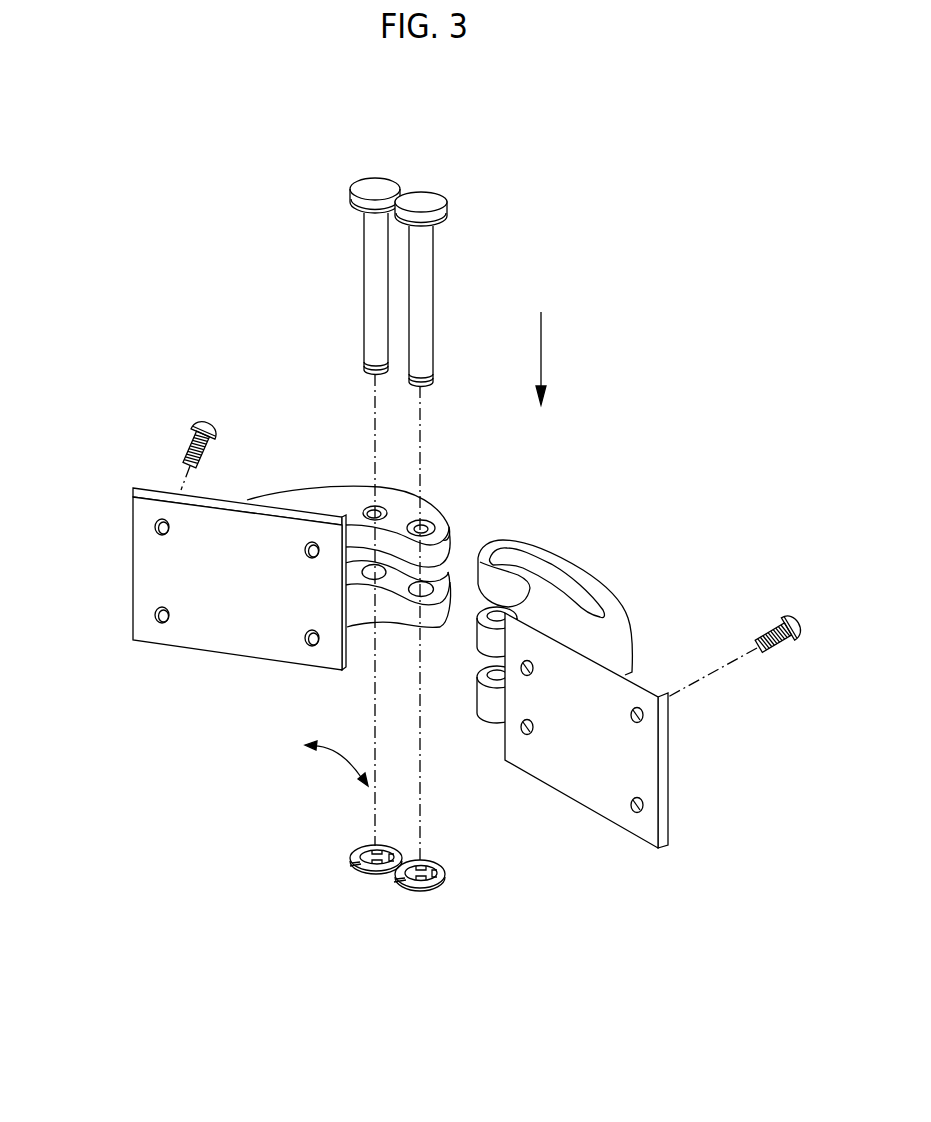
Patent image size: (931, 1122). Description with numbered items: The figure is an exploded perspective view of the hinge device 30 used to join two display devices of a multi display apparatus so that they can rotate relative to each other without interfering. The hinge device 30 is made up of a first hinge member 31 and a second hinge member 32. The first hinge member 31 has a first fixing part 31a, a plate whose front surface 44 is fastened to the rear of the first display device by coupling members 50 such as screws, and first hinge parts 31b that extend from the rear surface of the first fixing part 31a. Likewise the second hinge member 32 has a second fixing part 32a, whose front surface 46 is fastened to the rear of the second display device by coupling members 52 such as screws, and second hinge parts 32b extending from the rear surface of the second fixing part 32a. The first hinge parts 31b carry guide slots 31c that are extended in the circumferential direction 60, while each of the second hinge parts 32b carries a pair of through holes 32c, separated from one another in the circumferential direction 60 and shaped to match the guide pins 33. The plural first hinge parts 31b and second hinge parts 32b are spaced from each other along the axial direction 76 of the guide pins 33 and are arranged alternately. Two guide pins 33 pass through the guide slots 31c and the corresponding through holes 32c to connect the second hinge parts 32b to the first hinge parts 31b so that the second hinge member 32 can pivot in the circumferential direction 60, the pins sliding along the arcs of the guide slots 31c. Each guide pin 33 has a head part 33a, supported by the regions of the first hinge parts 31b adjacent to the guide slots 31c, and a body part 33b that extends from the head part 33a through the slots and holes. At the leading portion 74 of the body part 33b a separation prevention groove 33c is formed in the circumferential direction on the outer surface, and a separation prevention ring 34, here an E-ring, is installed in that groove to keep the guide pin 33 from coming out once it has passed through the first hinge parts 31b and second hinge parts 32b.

The hinge device 30 is at (318, 108).
The first hinge member 31 is at (638, 601).
The first fixing part 31a is at (665, 752).
The first hinge parts 31b is at (583, 573).
The guide slots 31c is at (512, 560).
The second hinge member 32 is at (279, 478).
The second fixing part 32a is at (133, 560).
The second hinge parts 32b is at (328, 497).
The through holes 32c is at (380, 512).
The guide pins 33 is at (358, 300).
The head part 33a is at (445, 218).
The body part 33b is at (432, 298).
The separation prevention groove 33c is at (433, 380).
The separation prevention ring 34 is at (408, 887).
The front surface 44 is at (574, 770).
The front surface 46 is at (208, 643).
The coupling members 50 is at (767, 632).
The coupling members 52 is at (190, 441).
The circumferential direction 60 is at (339, 756).
The leading portion 74 is at (372, 368).
The axial direction 76 is at (542, 358).